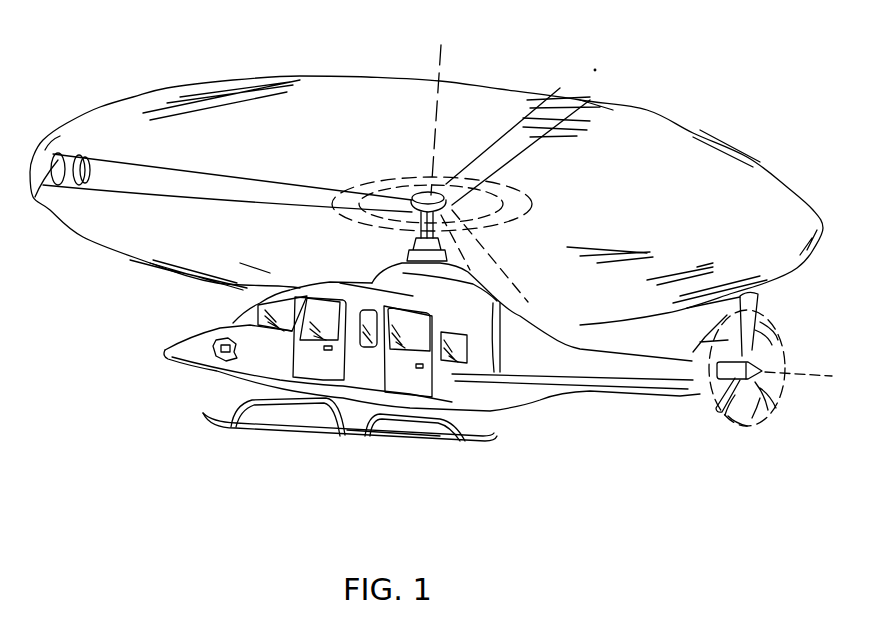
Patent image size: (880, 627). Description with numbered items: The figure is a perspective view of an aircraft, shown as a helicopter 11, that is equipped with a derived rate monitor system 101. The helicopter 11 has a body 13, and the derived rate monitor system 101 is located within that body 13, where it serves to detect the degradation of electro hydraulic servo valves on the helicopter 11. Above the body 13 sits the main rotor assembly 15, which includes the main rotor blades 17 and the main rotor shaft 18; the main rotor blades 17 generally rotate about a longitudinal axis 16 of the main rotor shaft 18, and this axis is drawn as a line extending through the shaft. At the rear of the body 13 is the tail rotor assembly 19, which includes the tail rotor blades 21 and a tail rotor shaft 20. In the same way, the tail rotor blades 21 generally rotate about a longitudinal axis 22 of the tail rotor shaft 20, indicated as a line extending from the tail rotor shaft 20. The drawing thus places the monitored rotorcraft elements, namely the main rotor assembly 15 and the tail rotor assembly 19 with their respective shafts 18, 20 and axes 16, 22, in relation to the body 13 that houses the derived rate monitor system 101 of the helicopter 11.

The helicopter 11 is at (596, 71).
The body 13 is at (194, 372).
The main rotor assembly 15 is at (482, 246).
The longitudinal axis 16 is at (433, 120).
The main rotor blades 17 is at (170, 175).
The main rotor shaft 18 is at (410, 230).
The tail rotor assembly 19 is at (765, 431).
The tail rotor shaft 20 is at (727, 417).
The tail rotor blades 21 is at (773, 342).
The longitudinal axis 22 is at (818, 380).
The derived rate monitor system 101 is at (222, 340).